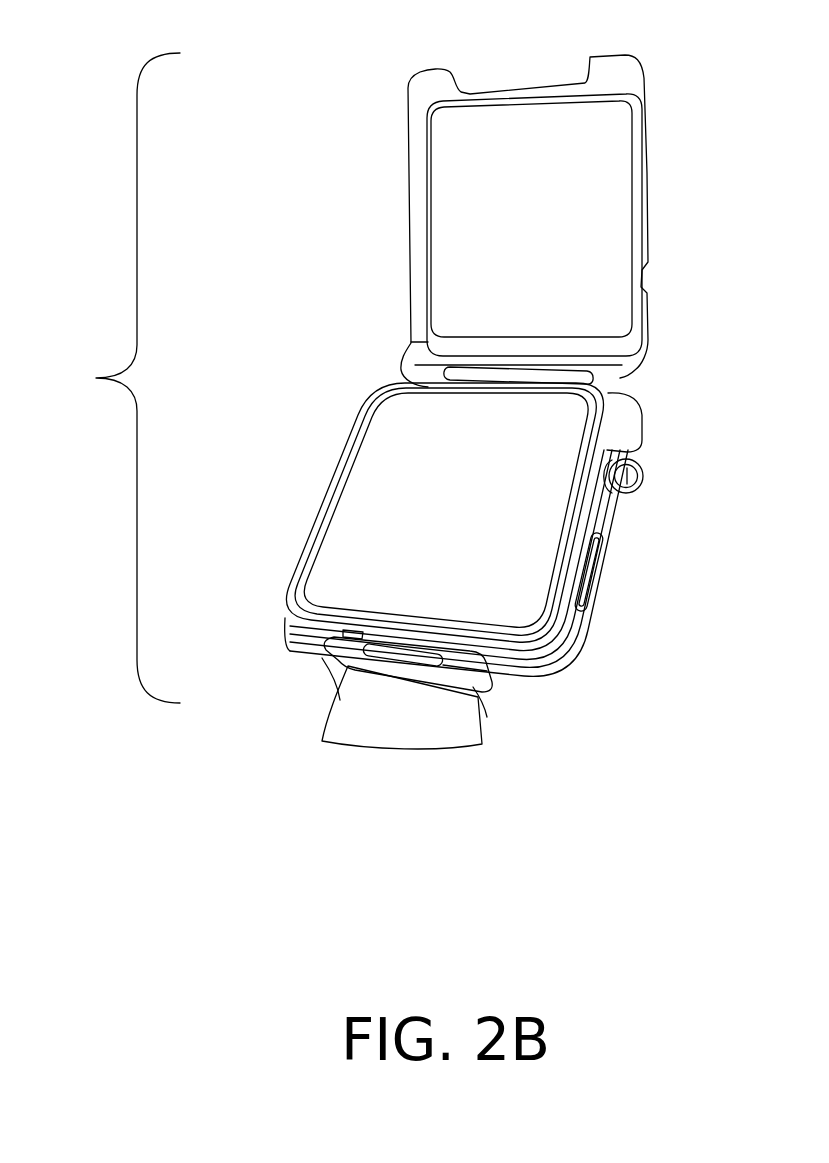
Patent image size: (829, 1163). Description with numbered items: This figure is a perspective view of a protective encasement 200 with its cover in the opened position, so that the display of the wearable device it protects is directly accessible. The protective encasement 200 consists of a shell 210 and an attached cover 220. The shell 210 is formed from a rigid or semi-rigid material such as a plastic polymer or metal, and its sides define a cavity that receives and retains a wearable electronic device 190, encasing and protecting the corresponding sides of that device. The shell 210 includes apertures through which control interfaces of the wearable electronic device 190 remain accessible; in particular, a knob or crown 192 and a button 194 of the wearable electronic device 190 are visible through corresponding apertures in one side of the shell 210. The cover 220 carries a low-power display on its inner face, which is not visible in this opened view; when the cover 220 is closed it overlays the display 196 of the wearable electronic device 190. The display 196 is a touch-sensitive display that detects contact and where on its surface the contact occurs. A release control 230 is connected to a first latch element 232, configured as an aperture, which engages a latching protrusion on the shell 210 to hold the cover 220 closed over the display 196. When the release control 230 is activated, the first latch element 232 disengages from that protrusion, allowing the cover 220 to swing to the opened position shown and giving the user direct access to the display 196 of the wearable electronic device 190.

The protective encasement 200 is at (110, 378).
The cover 220 is at (632, 70).
The display 196 is at (412, 468).
The shell 210 is at (313, 522).
The wearable electronic device 190 is at (552, 602).
The crown 192 is at (630, 480).
The button 194 is at (591, 572).
The first latch element 232 is at (350, 643).
The release control 230 is at (482, 705).